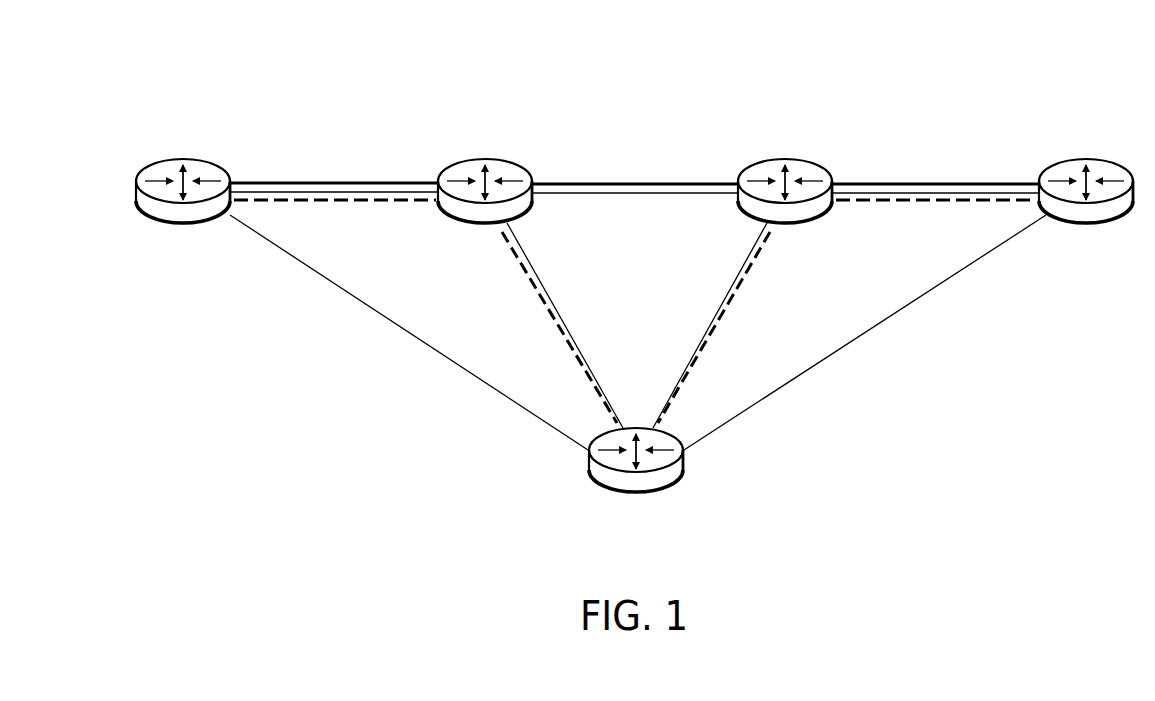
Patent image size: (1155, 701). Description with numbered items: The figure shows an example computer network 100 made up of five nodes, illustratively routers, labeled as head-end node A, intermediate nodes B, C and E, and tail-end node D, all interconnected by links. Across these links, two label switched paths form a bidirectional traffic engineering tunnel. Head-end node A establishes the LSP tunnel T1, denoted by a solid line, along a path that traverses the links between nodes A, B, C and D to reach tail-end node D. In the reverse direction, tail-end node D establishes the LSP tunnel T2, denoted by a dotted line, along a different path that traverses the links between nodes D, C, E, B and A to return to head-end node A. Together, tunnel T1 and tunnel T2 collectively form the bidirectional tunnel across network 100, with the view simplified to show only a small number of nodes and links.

The computer network 100 is at (226, 52).
The LSP tunnel T1 is at (322, 184).
The LSP tunnel T2 is at (730, 300).
The head-end node A is at (183, 171).
The intermediate node B is at (485, 171).
The intermediate node C is at (785, 171).
The tail-end node D is at (1086, 171).
The intermediate node E is at (636, 483).